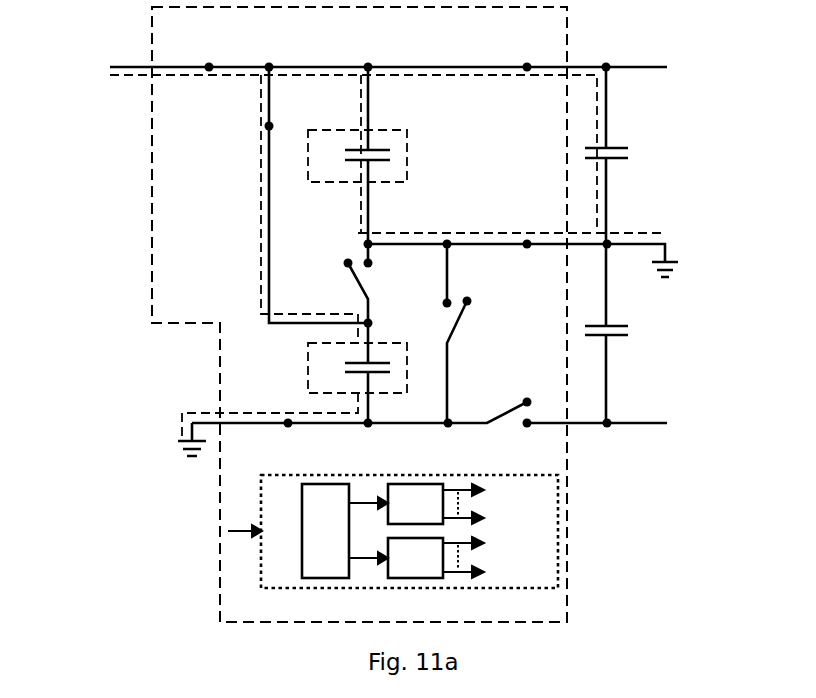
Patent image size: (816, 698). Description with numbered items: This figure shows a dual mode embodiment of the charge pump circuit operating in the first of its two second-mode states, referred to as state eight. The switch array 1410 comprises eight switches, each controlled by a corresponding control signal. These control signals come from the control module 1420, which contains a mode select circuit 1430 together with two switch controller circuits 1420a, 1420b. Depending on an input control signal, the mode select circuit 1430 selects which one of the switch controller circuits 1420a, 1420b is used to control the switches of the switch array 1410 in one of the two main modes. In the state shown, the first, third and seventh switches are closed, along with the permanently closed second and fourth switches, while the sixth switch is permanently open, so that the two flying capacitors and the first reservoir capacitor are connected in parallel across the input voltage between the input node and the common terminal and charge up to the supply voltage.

The switch array 1410 is at (391, 314).
The control module 1420 is at (393, 531).
The switch controller circuit 1420a is at (415, 504).
The switch controller circuit 1420b is at (415, 558).
The mode select circuit 1430 is at (325, 531).